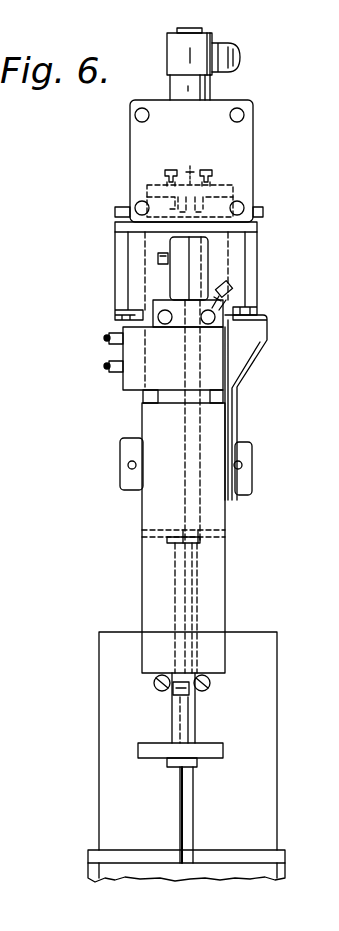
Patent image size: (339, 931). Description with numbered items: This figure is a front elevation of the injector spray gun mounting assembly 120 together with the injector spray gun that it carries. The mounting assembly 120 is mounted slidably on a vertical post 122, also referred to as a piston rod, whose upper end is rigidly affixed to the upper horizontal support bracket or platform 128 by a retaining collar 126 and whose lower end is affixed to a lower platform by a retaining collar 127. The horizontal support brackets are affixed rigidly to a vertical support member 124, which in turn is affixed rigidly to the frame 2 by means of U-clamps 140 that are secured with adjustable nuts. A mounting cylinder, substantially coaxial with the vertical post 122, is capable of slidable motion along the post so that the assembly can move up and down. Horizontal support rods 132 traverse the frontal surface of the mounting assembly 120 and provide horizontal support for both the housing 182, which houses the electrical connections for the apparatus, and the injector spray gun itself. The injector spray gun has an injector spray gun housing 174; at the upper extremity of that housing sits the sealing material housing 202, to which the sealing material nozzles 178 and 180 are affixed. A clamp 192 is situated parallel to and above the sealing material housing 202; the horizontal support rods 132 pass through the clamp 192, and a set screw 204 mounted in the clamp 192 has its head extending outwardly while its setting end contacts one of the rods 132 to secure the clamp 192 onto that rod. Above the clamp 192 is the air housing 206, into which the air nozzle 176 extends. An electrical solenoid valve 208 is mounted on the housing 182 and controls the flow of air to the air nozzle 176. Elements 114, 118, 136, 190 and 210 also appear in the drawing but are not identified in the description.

The frame 2 is at (90, 868).
The nuts 114 is at (154, 683).
The lock nut 118 is at (178, 690).
The injector spray gun mounting assembly 120 is at (230, 267).
The vertical post 122 is at (188, 713).
The vertical support member 124 is at (197, 510).
The retaining collar 126 is at (207, 147).
The retaining collar 127 is at (172, 767).
The horizontal support bracket 128 is at (228, 192).
The horizontal support rods 132 is at (165, 324).
The pivot pin 136 is at (130, 467).
The U-clamps 140 is at (210, 828).
The injector spray gun housing 174 is at (150, 510).
The air nozzle 176 is at (158, 255).
The sealing material nozzle 178 is at (106, 337).
The sealing material nozzle 180 is at (106, 366).
The housing 182 is at (133, 125).
The mounting ear 190 is at (122, 450).
The clamp 192 is at (177, 300).
The sealing material housing 202 is at (122, 383).
The set screw 204 is at (233, 290).
The air housing 206 is at (197, 247).
The electrical solenoid valve 208 is at (168, 43).
The connector 210 is at (234, 47).